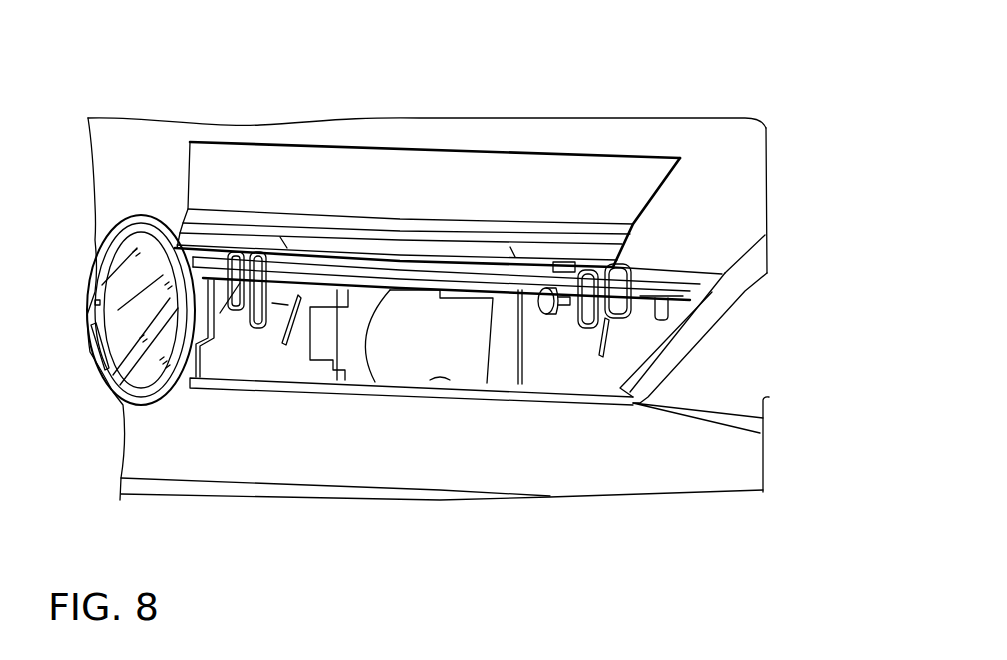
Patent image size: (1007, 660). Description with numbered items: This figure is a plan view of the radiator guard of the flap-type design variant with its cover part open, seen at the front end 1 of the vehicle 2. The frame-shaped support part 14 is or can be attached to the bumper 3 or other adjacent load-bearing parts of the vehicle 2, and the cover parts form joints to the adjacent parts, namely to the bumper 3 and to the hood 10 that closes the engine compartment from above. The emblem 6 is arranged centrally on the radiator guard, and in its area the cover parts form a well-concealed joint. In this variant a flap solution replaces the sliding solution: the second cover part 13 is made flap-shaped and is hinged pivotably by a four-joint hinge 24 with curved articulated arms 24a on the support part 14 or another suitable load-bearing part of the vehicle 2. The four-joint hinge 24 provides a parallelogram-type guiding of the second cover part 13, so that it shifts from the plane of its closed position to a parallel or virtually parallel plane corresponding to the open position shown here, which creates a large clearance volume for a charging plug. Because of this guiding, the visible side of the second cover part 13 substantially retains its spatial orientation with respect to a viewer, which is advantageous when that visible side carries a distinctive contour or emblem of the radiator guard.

The front end 1 is at (183, 108).
The vehicle 2 is at (428, 256).
The bumper 3 is at (422, 478).
The emblem 6 is at (145, 410).
The hood 10 is at (710, 128).
The second cover part 13 is at (510, 173).
The support part 14 is at (697, 316).
The four-joint hinge 24 is at (266, 326).
The articulated arms 24a is at (240, 302).